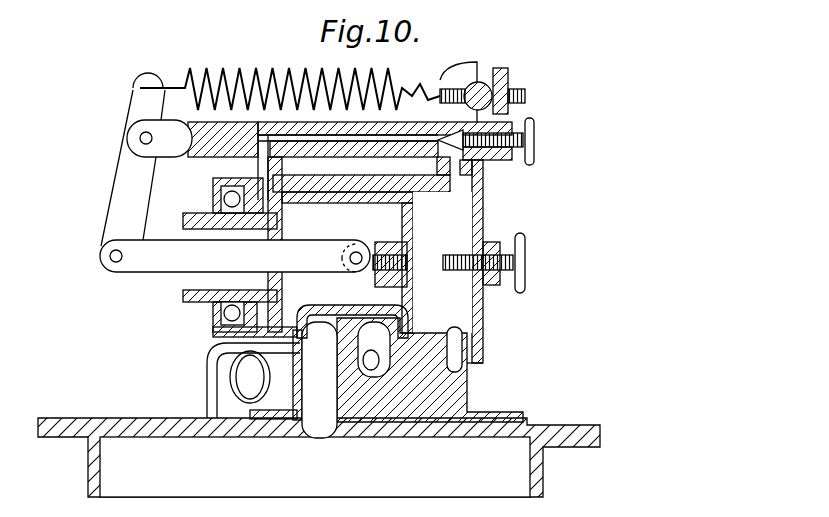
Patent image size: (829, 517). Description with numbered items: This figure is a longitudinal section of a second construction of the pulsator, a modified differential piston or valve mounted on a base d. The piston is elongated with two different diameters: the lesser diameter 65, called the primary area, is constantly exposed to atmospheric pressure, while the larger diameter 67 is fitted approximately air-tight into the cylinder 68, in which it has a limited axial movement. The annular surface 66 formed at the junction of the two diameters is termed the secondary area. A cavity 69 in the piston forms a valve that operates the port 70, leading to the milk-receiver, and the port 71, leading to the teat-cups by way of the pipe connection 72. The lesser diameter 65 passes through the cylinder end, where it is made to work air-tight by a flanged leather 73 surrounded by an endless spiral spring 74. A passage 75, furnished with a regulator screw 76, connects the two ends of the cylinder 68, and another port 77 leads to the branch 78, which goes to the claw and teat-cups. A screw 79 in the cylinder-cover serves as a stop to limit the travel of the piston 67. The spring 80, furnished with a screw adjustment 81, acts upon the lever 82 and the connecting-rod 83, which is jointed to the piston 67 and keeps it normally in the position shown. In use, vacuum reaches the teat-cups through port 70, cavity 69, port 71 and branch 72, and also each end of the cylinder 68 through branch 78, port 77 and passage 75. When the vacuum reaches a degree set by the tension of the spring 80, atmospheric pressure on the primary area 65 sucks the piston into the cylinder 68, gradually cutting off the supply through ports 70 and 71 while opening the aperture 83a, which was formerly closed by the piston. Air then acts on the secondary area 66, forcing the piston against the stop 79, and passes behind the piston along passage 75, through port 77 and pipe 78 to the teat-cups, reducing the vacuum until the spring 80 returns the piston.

The base plate d is at (75, 430).
The lesser diameter 65 is at (183, 296).
The annular surface 66 is at (280, 305).
The larger diameter 67 is at (428, 268).
The cylinder 68 is at (453, 243).
The cavity 69 is at (373, 320).
The port 70 is at (319, 380).
The port 71 is at (380, 373).
The pipe connection 72 is at (367, 368).
The flanged leather 73 is at (213, 197).
The endless spiral spring 74 is at (213, 322).
The passage 75 is at (395, 143).
The regulator screw 76 is at (534, 145).
The port 77 is at (462, 342).
The branch 78 is at (467, 368).
The screw 79 is at (522, 288).
The spring 80 is at (225, 75).
The screw adjustment 81 is at (525, 97).
The lever 82 is at (146, 159).
The connecting-rod 83 is at (235, 256).
The aperture 83a is at (262, 352).